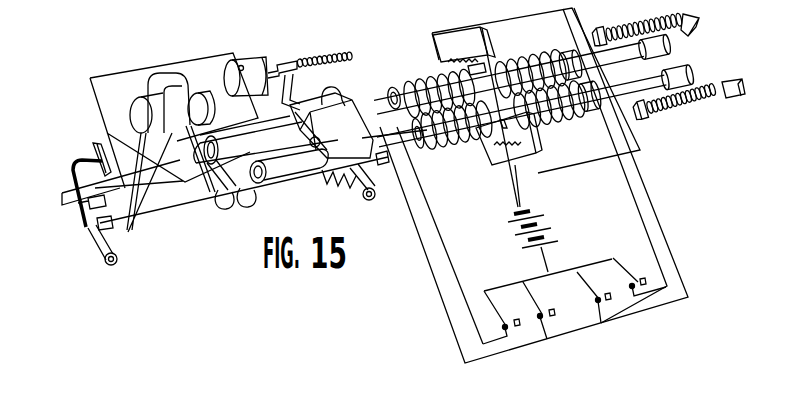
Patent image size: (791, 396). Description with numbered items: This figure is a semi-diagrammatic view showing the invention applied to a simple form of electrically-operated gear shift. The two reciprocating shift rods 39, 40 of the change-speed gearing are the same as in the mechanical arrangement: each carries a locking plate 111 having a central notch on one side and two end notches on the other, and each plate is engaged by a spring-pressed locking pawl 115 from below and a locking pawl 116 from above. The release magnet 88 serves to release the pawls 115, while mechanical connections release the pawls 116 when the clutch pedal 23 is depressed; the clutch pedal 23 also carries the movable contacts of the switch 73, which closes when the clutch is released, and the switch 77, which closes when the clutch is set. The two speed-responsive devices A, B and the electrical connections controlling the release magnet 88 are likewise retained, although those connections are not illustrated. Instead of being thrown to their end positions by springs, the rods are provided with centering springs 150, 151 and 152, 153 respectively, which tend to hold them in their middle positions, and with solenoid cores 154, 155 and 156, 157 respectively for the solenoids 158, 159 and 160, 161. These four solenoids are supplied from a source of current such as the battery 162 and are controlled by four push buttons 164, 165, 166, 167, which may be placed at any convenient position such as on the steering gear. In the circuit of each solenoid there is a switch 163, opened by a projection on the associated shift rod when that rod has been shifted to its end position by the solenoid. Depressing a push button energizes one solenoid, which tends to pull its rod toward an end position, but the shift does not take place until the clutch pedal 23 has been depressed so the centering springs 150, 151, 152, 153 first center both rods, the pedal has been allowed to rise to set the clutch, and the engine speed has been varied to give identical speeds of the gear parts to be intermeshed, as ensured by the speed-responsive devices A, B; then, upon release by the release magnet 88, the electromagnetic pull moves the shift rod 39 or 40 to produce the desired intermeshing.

The clutch lever 23 is at (83, 163).
The switch 73 is at (78, 201).
The switch 77 is at (90, 214).
The speed-responsive device A is at (158, 152).
The speed-responsive device B is at (211, 141).
The release magnet 88 is at (255, 67).
The reciprocating rod 40 is at (262, 142).
The reciprocating rod 39 is at (249, 172).
The locking plate 111 is at (358, 108).
The locking pawl 115 is at (335, 100).
The locking pawl 116 is at (336, 186).
The solenoid core 156 is at (413, 80).
The solenoid 160 is at (397, 80).
The switch 163 is at (443, 68).
The solenoid core 157 is at (526, 72).
The solenoid 161 is at (537, 62).
The push button 164 is at (505, 122).
The solenoid core 154 is at (470, 150).
The solenoid 158 is at (442, 142).
The solenoid core 155 is at (550, 112).
The solenoid 159 is at (580, 112).
The battery 162 is at (549, 230).
The push button 165 is at (538, 316).
The push button 166 is at (595, 300).
The push button 167 is at (630, 286).
The centering spring 150 is at (667, 100).
The centering spring 151 is at (707, 92).
The centering spring 152 is at (620, 32).
The centering spring 153 is at (668, 30).